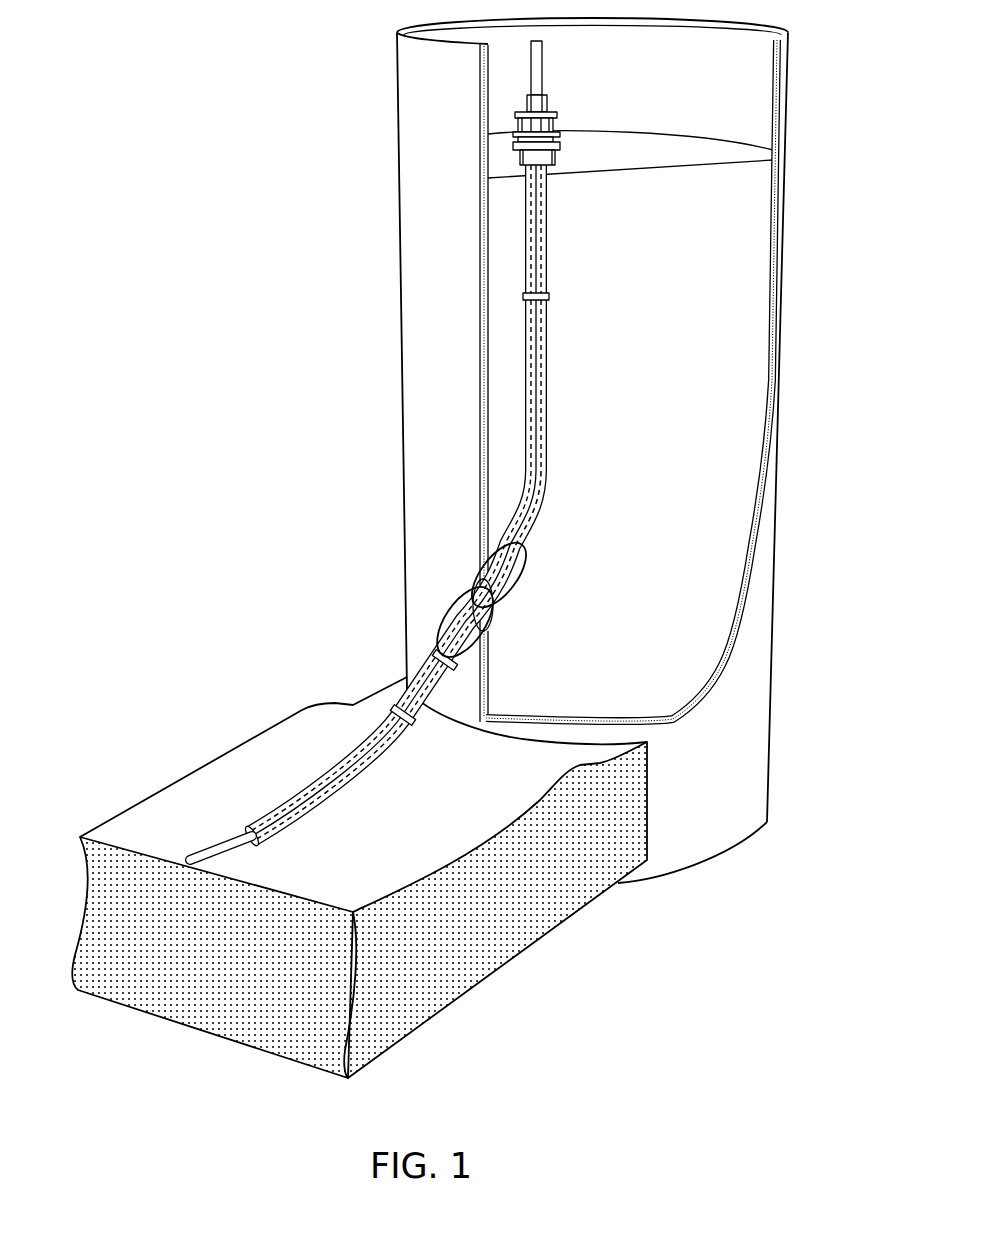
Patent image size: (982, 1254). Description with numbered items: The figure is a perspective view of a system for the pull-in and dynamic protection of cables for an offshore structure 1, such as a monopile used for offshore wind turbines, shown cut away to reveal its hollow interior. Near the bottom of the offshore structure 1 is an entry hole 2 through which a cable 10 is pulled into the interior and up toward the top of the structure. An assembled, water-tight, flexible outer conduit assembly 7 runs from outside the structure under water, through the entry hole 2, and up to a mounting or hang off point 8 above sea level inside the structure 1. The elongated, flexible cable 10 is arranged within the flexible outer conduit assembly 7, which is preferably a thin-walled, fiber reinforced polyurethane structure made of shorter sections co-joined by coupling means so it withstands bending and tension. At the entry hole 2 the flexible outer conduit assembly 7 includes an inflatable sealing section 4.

The offshore structure 1 is at (402, 332).
The entry hole 2 is at (480, 580).
The inflatable sealing section 4 is at (443, 623).
The flexible outer conduit assembly 7 is at (547, 297).
The hang off point 8 is at (560, 126).
The cable 10 is at (213, 845).